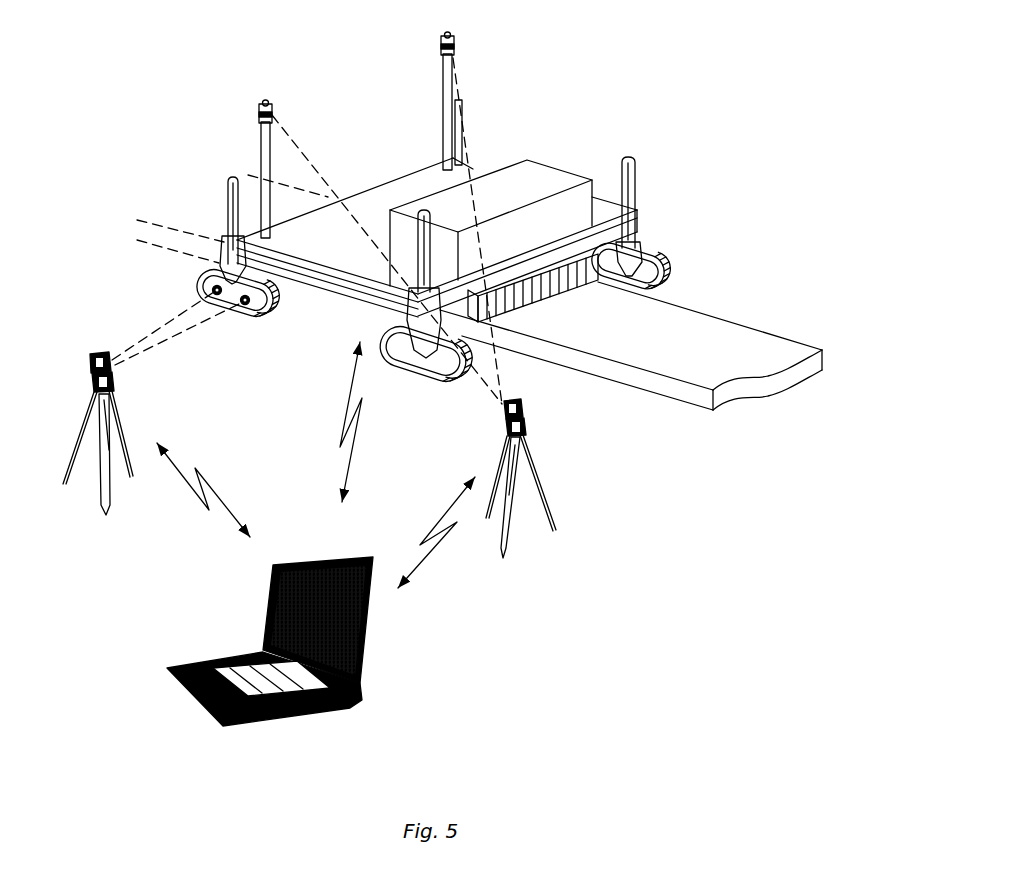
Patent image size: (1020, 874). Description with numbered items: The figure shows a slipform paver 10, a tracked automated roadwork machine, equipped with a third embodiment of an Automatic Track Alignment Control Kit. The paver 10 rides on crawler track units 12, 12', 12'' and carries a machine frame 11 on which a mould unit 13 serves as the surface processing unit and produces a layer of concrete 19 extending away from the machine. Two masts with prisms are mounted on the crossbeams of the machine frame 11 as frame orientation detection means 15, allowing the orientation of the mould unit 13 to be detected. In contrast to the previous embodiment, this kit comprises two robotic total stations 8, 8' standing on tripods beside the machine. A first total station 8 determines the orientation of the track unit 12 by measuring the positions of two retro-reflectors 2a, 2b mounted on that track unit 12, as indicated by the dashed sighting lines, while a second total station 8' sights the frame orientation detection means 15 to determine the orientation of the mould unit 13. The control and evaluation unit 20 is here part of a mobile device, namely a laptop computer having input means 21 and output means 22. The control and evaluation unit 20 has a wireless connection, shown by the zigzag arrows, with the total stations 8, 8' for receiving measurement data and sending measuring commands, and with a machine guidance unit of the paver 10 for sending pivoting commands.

The slipform paver 10 is at (440, 228).
The machine frame 11 is at (491, 202).
The track unit 12 is at (214, 302).
The track unit 12' is at (429, 371).
The track unit 12'' is at (668, 264).
The retro-reflector 2a is at (268, 320).
The retro-reflector 2b is at (177, 299).
The mould unit 13 is at (546, 288).
The frame orientation detection means 15 is at (356, 135).
The layer of concrete 19 is at (631, 346).
The first total station 8 is at (132, 433).
The second total station 8' is at (540, 478).
The control and evaluation unit 20 is at (290, 641).
The input means 21 is at (234, 665).
The output means 22 is at (352, 620).